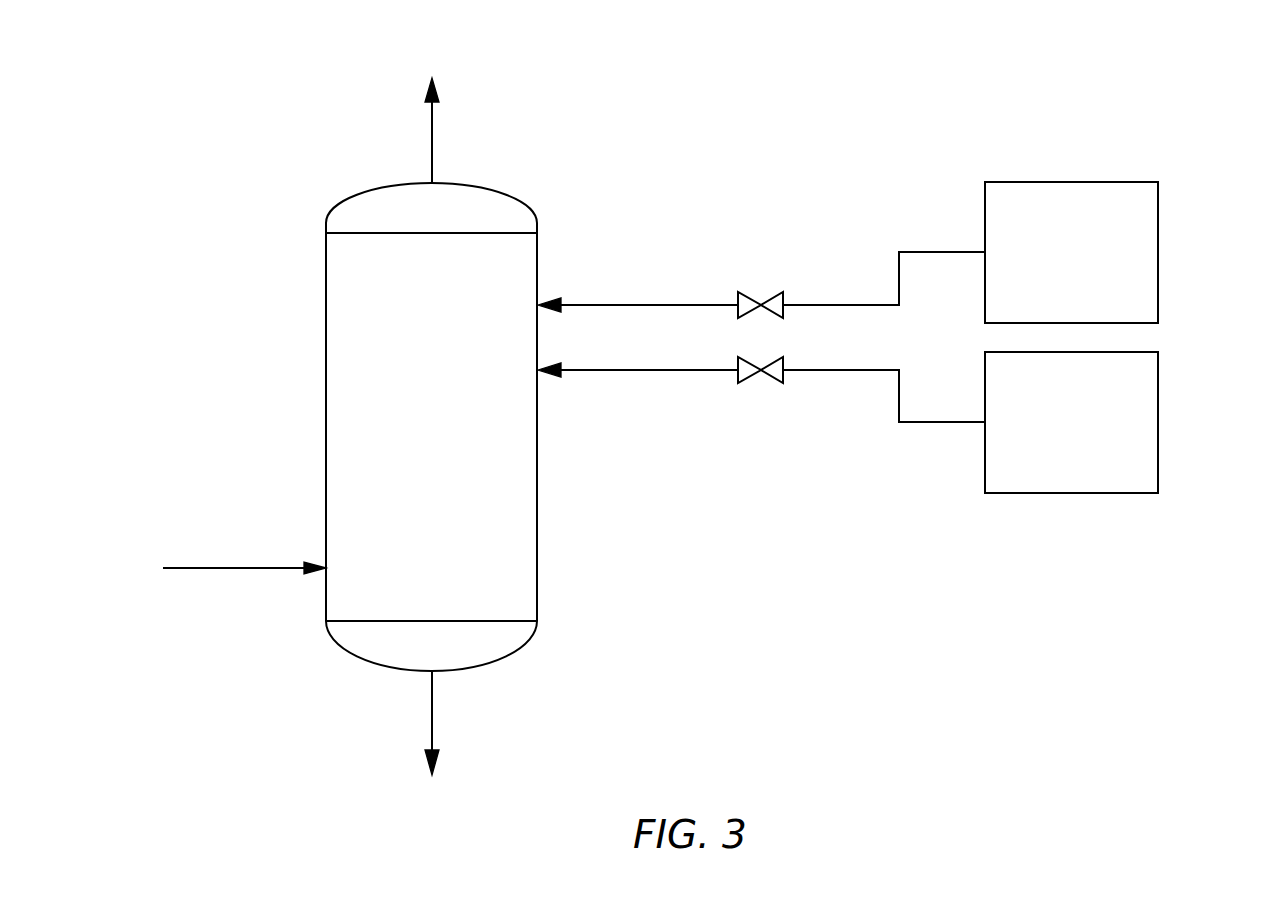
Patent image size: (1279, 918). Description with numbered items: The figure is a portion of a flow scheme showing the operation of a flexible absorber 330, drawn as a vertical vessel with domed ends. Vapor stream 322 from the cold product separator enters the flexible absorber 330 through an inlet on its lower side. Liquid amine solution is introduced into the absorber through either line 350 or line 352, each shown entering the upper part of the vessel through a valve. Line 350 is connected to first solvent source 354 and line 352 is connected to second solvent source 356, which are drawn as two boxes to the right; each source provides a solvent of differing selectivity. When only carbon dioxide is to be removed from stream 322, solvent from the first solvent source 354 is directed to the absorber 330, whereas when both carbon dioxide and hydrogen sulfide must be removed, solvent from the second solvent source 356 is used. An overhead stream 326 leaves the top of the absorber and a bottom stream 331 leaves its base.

The vapor stream 322 is at (238, 565).
The overhead outlet stream 326 is at (434, 141).
The flexible absorber 330 is at (530, 213).
The bottom outlet stream 331 is at (434, 712).
The line 350 is at (639, 303).
The line 352 is at (639, 375).
The first solvent source 354 is at (1160, 252).
The second solvent source 356 is at (1160, 422).